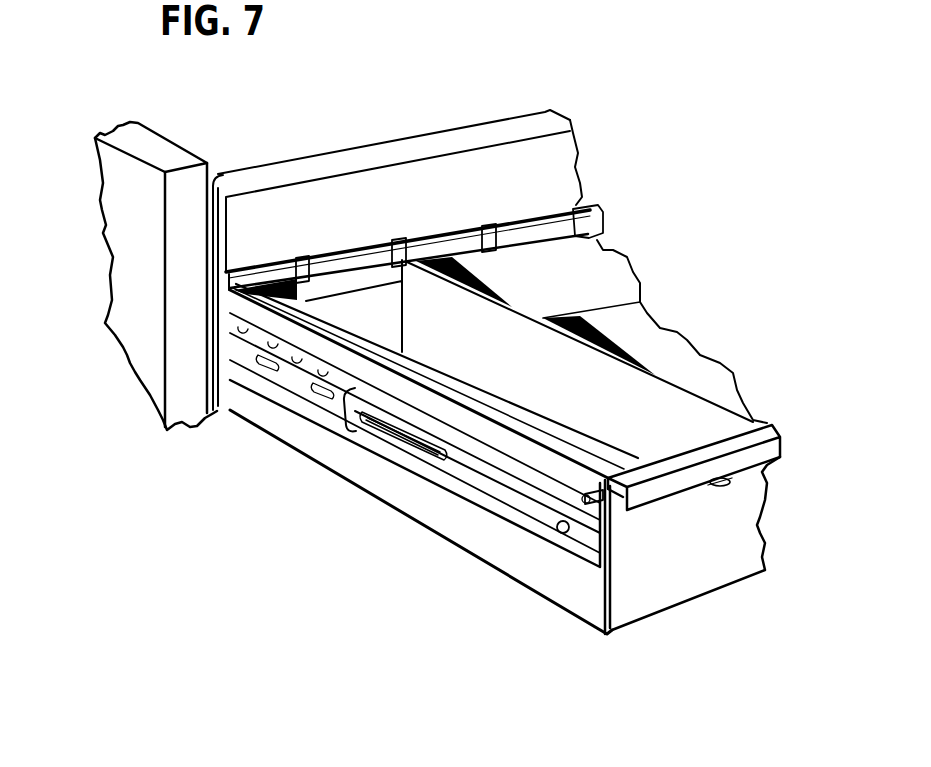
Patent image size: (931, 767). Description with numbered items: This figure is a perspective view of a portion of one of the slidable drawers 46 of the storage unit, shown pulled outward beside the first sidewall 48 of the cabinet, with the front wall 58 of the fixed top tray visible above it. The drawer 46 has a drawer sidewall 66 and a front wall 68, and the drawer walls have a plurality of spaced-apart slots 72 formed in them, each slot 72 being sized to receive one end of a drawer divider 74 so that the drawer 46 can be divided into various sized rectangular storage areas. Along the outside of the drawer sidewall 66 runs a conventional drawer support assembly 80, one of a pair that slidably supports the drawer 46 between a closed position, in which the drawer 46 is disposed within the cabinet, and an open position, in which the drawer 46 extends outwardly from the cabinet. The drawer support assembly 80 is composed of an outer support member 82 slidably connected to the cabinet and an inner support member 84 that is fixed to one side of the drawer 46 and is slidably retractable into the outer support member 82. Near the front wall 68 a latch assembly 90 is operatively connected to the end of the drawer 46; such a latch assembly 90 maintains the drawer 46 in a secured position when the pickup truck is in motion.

The slidable drawer 46 is at (683, 606).
The first sidewall 48 is at (118, 220).
The front wall 58 is at (341, 197).
The drawer sidewall 66 is at (545, 575).
The front wall 68 is at (745, 528).
The slot 72 is at (500, 238).
The drawer divider 74 is at (538, 384).
The drawer support assembly 80 is at (377, 455).
The outer support member 82 is at (298, 397).
The inner support member 84 is at (487, 480).
The latch assembly 90 is at (717, 492).